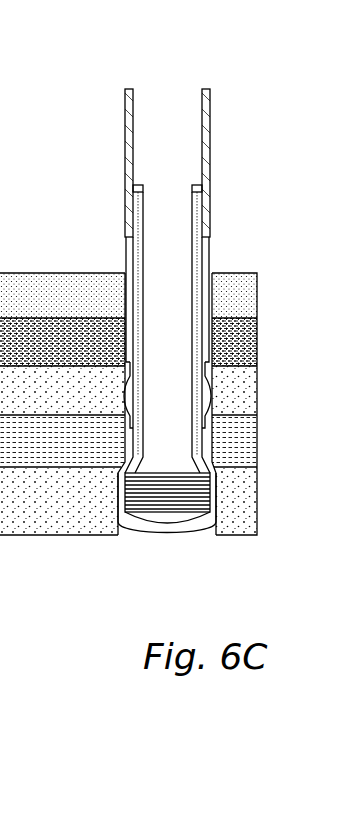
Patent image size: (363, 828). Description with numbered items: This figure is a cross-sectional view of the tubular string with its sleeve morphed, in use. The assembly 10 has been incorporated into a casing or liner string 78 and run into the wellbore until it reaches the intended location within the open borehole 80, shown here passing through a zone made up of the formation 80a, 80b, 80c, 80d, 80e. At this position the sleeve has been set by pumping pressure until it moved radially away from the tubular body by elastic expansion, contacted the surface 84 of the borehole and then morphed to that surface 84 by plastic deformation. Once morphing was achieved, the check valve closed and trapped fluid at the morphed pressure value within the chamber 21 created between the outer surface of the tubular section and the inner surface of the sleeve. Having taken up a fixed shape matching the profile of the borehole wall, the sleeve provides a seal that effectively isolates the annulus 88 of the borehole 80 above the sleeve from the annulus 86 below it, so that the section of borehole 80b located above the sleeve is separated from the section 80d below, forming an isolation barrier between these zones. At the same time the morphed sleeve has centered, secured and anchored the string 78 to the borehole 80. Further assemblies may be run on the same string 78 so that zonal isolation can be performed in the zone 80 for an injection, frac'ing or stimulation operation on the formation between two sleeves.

The assembly 10 is at (125, 398).
The chamber 21 is at (203, 403).
The casing or liner string 78 is at (197, 258).
The open borehole 80 is at (125, 263).
The formation 80a is at (252, 300).
The section of borehole above the sleeve 80b is at (252, 347).
The formation 80c is at (252, 395).
The section of borehole below the sleeve 80d is at (252, 445).
The formation 80e is at (252, 493).
The surface of the borehole 84 is at (208, 270).
The annulus below the sleeve 86 is at (132, 454).
The annulus above the sleeve 88 is at (200, 352).